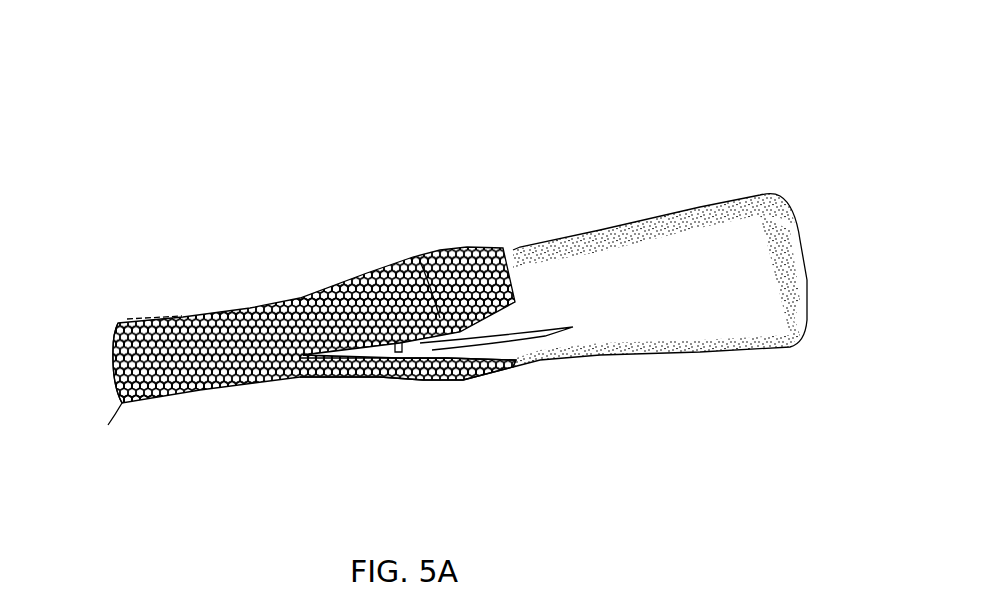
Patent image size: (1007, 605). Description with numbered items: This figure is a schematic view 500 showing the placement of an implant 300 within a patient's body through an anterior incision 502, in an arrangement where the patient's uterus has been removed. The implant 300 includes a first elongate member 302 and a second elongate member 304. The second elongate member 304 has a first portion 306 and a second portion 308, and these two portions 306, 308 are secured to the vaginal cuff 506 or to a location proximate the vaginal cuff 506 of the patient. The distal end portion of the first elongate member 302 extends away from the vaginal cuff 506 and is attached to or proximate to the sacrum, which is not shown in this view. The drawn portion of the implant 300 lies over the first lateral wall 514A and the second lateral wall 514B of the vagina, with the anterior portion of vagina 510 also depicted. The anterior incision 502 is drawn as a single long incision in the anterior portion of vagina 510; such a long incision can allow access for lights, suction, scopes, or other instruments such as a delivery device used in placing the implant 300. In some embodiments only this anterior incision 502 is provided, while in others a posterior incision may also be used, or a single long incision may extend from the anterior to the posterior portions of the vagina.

The graft assembly 500 is at (90, 95).
The implant 300 is at (110, 367).
The first elongate member 302 is at (172, 317).
The second elongate member 304 is at (355, 305).
The first portion 306 is at (465, 247).
The second portion 308 is at (427, 377).
The anterior incision 502 is at (520, 341).
The vaginal cuff 506 is at (682, 232).
The anterior portion of vagina 510 is at (663, 303).
The first lateral wall 514A is at (578, 240).
The second lateral wall 514B is at (743, 353).